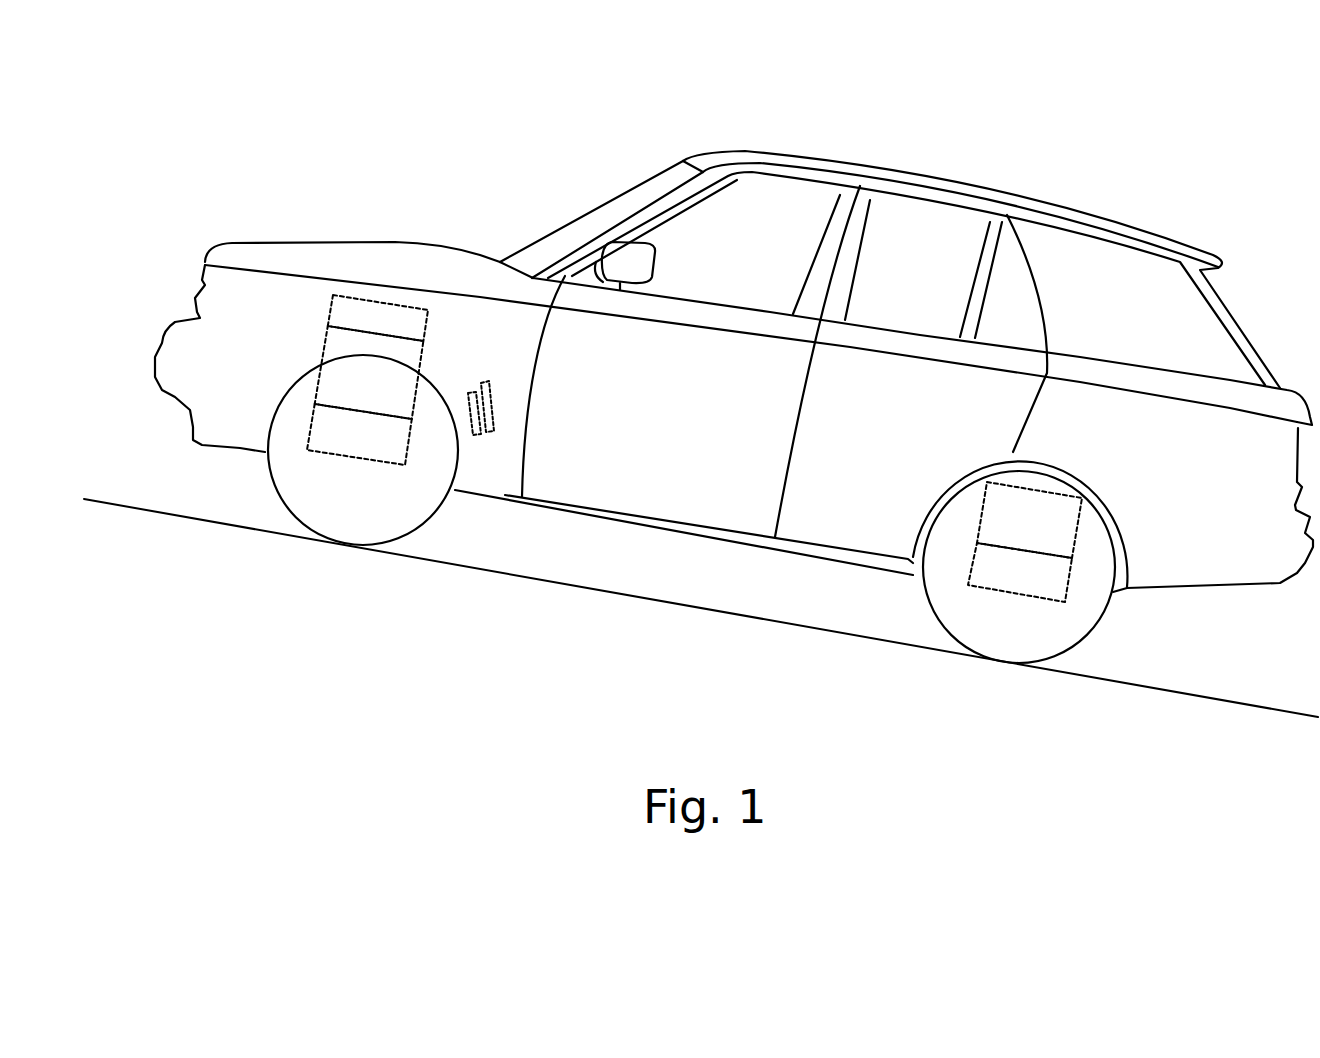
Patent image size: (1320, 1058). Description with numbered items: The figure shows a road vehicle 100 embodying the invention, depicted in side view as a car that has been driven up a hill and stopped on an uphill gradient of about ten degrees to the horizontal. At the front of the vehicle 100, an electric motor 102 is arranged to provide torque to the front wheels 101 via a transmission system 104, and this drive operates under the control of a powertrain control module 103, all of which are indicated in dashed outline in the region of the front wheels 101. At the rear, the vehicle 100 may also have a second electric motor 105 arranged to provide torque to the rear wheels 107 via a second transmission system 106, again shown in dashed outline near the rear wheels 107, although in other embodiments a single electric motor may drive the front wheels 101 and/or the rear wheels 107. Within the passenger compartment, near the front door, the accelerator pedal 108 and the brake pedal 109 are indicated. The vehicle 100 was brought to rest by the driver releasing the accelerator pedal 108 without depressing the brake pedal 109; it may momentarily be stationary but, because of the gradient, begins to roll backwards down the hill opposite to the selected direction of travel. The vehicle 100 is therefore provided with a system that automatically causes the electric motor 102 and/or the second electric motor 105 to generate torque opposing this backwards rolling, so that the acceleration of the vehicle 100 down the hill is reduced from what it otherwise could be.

The road vehicle 100 is at (511, 108).
The front wheels 101 is at (303, 487).
The electric motor 102 is at (360, 368).
The powertrain control module 103 is at (402, 320).
The transmission system 104 is at (358, 437).
The second electric motor 105 is at (1010, 558).
The second transmission system 106 is at (1025, 525).
The rear wheels 107 is at (977, 615).
The accelerator pedal 108 is at (492, 427).
The brake pedal 109 is at (475, 437).